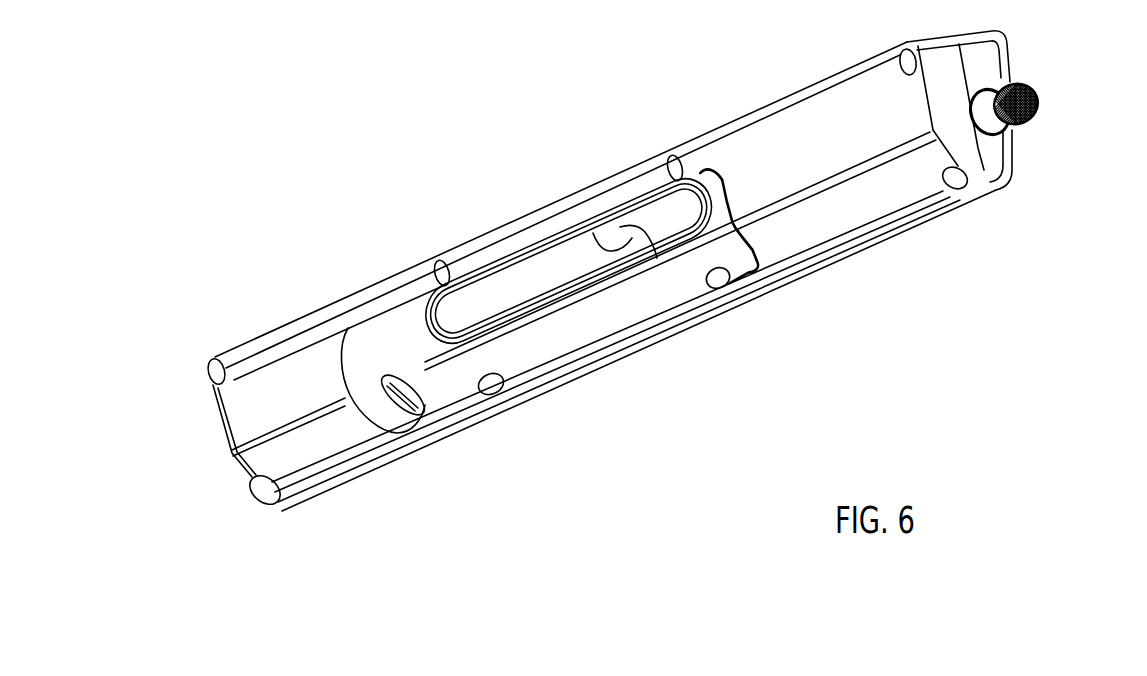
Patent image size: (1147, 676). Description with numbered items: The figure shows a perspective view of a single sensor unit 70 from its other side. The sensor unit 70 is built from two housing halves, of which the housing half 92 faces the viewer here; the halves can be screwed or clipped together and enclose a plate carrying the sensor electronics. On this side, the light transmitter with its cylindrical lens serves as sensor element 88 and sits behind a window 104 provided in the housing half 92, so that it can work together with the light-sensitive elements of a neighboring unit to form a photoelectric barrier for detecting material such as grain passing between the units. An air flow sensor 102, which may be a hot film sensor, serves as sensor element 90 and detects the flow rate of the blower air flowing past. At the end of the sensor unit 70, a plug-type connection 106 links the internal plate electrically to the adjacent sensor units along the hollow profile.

The sensor unit 70 is at (905, 293).
The sensor element 88 is at (592, 280).
The sensor element 90 is at (408, 405).
The housing half 92 is at (810, 125).
The air flow sensor 102 is at (448, 466).
The window 104 is at (547, 290).
The plug-type connection 106 is at (1036, 96).